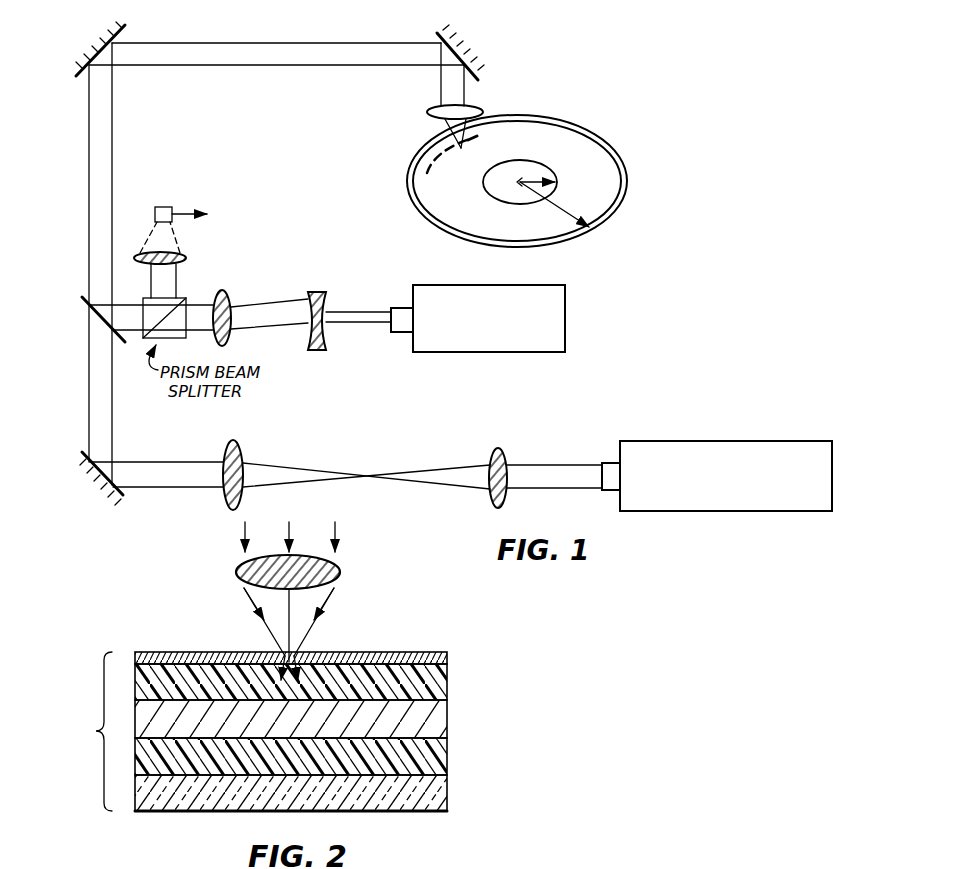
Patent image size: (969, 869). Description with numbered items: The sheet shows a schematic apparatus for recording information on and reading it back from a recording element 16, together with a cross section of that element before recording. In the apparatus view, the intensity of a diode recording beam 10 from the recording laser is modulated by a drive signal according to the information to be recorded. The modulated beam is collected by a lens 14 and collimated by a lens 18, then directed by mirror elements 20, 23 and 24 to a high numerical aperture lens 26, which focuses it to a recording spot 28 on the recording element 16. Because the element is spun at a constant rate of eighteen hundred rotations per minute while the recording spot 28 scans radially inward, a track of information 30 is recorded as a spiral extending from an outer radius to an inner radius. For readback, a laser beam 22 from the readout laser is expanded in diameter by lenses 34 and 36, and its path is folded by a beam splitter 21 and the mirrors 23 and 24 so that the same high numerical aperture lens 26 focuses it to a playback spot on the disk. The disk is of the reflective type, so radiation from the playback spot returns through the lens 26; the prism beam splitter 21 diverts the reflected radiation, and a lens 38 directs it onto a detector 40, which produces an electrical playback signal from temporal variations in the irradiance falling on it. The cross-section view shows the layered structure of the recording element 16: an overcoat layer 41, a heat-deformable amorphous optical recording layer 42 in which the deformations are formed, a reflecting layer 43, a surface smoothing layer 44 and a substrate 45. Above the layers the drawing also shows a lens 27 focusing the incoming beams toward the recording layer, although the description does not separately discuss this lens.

In FIG. 1, the diode recording beam 10 is at (538, 465).
In FIG. 1, the lens 14 is at (495, 456).
In FIG. 1, the recording element 16 is at (622, 151).
In FIG. 2, the recording element 16 is at (90, 731).
In FIG. 1, the lens 18 is at (229, 452).
In FIG. 1, the mirror element 20 is at (122, 493).
In FIG. 1, the beam splitter 21 is at (104, 321).
In FIG. 1, the readout laser beam 22 is at (362, 312).
In FIG. 1, the mirror element 23 is at (118, 32).
In FIG. 1, the mirror element 24 is at (437, 35).
In FIG. 1, the high numerical aperture lens 26 is at (478, 109).
In FIG. 2, the high numerical aperture lens 26 is at (287, 550).
In FIG. 2, the focusing lens 27 is at (241, 575).
In FIG. 1, the recording spot 28 is at (464, 150).
In FIG. 1, the track of information 30 is at (440, 173).
In FIG. 1, the lens 34 is at (324, 293).
In FIG. 1, the lens 36 is at (226, 297).
In FIG. 1, the lens 38 is at (147, 256).
In FIG. 1, the detector 40 is at (155, 212).
In FIG. 2, the overcoat layer 41 is at (448, 656).
In FIG. 2, the heat-deformable amorphous optical recording layer 42 is at (444, 685).
In FIG. 2, the reflecting layer 43 is at (445, 720).
In FIG. 2, the surface smoothing layer 44 is at (448, 754).
In FIG. 2, the substrate 45 is at (450, 795).